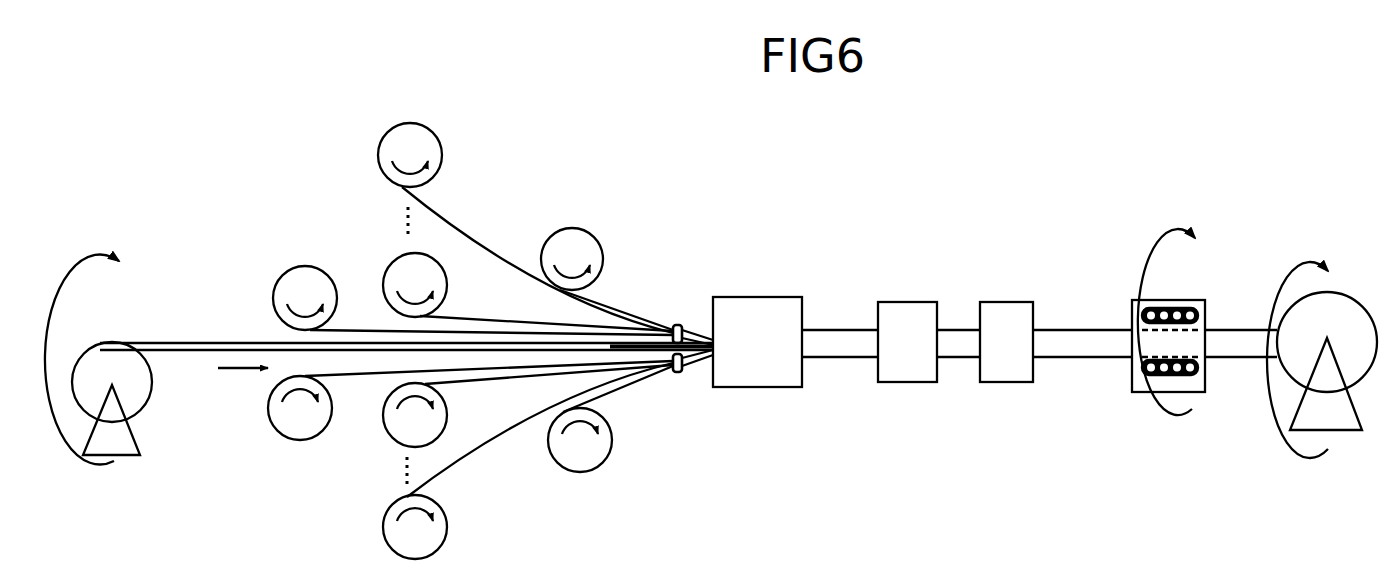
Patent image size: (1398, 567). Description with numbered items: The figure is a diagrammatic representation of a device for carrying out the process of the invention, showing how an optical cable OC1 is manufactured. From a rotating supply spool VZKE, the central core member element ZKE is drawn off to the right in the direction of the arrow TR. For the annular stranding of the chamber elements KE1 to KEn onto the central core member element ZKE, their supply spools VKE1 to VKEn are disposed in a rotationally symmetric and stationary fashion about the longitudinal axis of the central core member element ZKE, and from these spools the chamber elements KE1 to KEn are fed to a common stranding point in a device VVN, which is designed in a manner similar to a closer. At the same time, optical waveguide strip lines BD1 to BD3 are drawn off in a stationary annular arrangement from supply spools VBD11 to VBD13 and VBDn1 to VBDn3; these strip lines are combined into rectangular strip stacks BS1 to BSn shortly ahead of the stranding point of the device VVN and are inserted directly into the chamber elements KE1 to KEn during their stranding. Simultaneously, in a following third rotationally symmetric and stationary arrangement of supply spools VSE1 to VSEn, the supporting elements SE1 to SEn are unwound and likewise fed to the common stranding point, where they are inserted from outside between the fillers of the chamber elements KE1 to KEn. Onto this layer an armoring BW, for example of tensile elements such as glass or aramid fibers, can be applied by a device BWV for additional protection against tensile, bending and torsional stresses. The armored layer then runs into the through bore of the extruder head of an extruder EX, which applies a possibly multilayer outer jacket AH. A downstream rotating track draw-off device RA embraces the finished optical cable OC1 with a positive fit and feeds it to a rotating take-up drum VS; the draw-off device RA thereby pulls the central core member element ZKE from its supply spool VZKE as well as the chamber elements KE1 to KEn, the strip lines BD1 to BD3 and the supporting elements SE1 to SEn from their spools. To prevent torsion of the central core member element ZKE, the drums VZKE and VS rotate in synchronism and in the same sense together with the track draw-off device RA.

The rotating supply spool VZKE is at (112, 353).
The central core member element ZKE is at (240, 342).
The arrow (draw-off direction) TR is at (243, 387).
The supply spool for chamber element VKE1 is at (305, 280).
The supply spool for chamber element VKEn is at (295, 433).
The chamber element KE1 is at (353, 328).
The chamber element KEn is at (363, 375).
The supply spool for optical waveguide strip line VBD13 is at (420, 140).
The supply spool for optical waveguide strip line VBD11 is at (432, 272).
The supply spool for optical waveguide strip line VBDn1 is at (430, 415).
The supply spool for optical waveguide strip line VBDn3 is at (448, 525).
The optical waveguide strip line BD3 is at (455, 223).
The optical waveguide strip line BD1 is at (545, 325).
The supply spool for supporting element VSE1 is at (585, 250).
The supply spool for supporting element VSEn is at (603, 463).
The supporting element SE1 is at (618, 309).
The supporting element SEn is at (623, 388).
The rectangular strip stack BS1 is at (678, 323).
The rectangular strip stack BSn is at (684, 372).
The stranding device VVN is at (770, 310).
The armoring device BWV is at (912, 315).
The armoring BW is at (960, 342).
The extruder EX is at (1010, 317).
The outer jacket AH is at (1080, 340).
The track draw-off device RA is at (1165, 303).
The optical cable OC1 is at (1243, 343).
The rotating take-up drum VS is at (1360, 320).